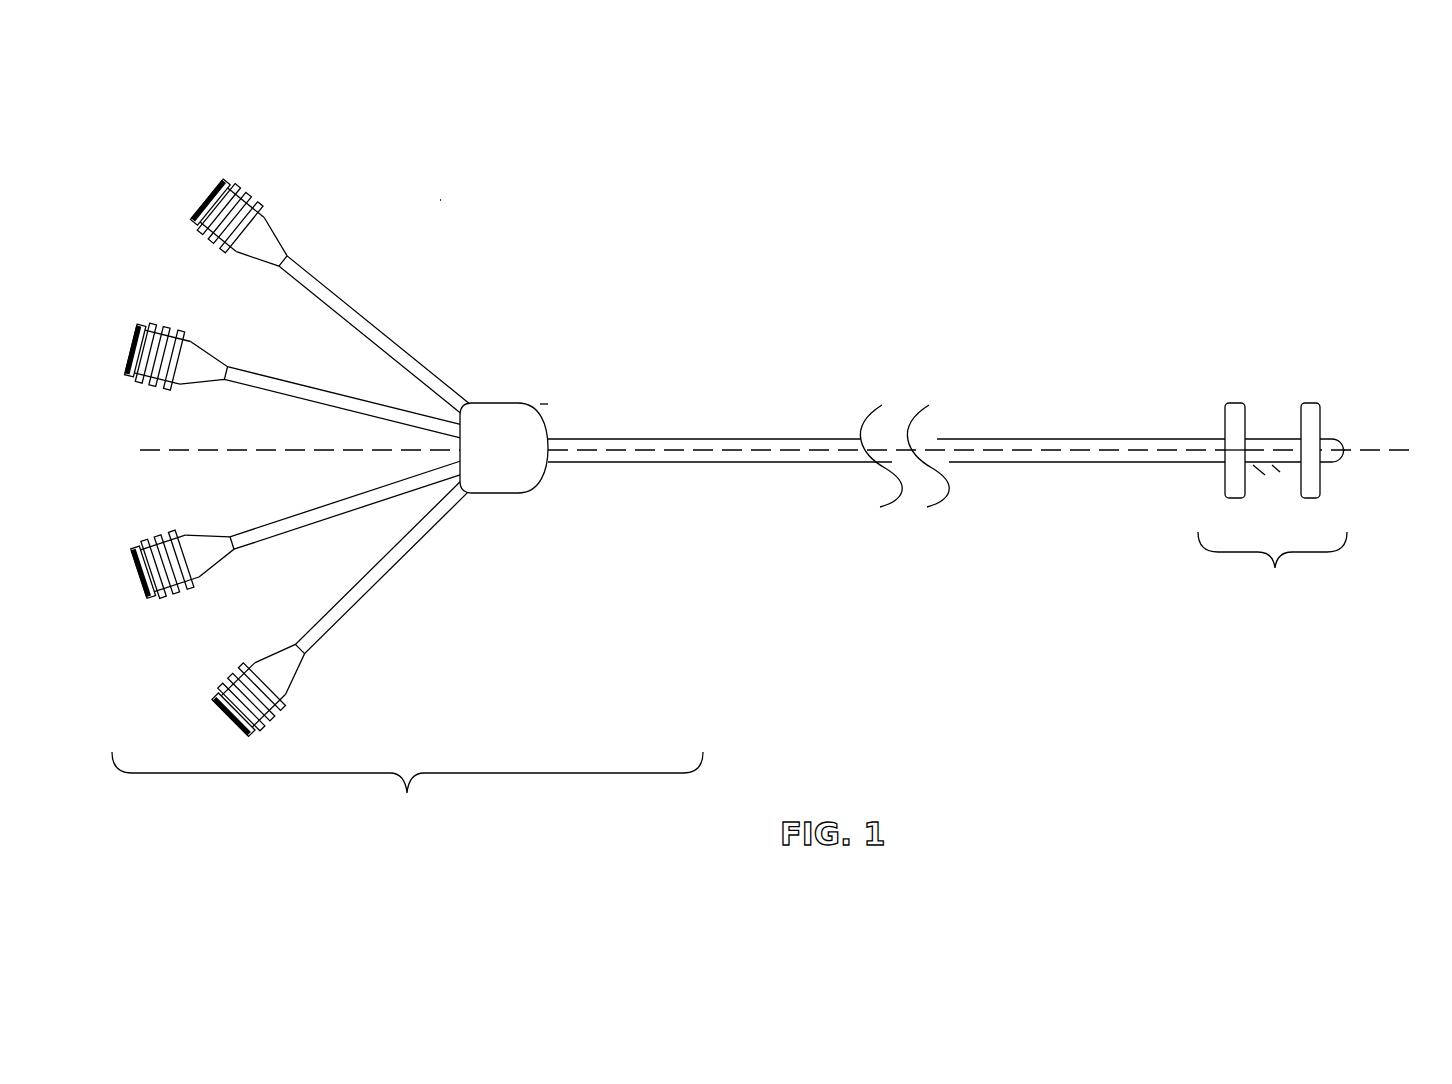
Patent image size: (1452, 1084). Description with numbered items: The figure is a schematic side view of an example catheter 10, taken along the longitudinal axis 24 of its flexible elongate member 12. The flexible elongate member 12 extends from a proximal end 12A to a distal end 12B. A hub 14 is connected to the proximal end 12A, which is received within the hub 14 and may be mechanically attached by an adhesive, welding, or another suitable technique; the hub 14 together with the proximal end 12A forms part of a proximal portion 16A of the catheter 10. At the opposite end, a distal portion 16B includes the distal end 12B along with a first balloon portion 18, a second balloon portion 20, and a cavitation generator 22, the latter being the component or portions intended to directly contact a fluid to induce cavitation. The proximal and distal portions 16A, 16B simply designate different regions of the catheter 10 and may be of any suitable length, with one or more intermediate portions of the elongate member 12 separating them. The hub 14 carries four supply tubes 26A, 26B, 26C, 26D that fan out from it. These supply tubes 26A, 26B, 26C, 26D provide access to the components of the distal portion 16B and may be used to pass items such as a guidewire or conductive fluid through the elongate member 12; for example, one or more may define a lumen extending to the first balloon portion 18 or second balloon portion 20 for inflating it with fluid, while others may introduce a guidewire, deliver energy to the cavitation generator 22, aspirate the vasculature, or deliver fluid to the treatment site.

The catheter 10 is at (440, 198).
The flexible elongate member 12 is at (805, 437).
The proximal end 12A is at (550, 437).
The distal end 12B is at (1345, 450).
The hub 14 is at (512, 401).
The proximal portion 16A is at (407, 786).
The distal portion 16B is at (1272, 565).
The first balloon portion 18 is at (1227, 412).
The second balloon portion 20 is at (1318, 423).
The cavitation generator 22 is at (1272, 477).
The longitudinal axis 24 is at (723, 451).
The supply tube 26A is at (390, 328).
The supply tube 26B is at (298, 381).
The supply tube 26C is at (286, 507).
The supply tube 26D is at (313, 612).